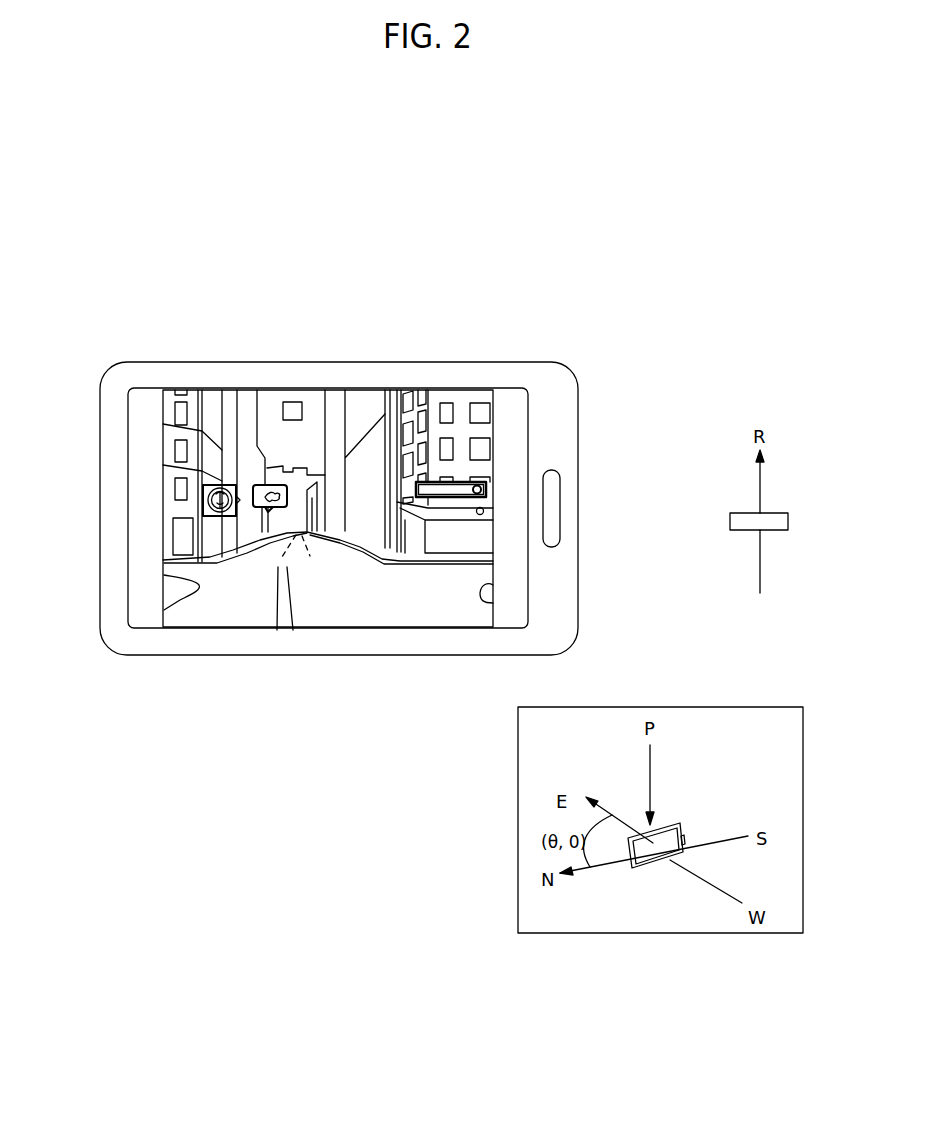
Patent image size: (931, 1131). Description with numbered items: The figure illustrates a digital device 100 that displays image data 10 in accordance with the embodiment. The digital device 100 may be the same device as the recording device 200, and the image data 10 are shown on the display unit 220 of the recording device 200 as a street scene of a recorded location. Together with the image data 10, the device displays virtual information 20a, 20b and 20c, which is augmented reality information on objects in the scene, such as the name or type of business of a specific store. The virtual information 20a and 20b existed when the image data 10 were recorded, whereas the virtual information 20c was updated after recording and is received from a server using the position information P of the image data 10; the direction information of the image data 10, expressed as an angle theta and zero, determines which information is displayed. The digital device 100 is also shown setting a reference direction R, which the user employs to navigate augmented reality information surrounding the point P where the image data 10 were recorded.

The image data 10 is at (232, 633).
The virtual information 20a is at (203, 497).
The virtual information 20b is at (470, 482).
The virtual information 20c is at (273, 485).
The digital device 100 is at (788, 514).
The recording device 200 is at (337, 640).
The display unit 220 is at (427, 640).